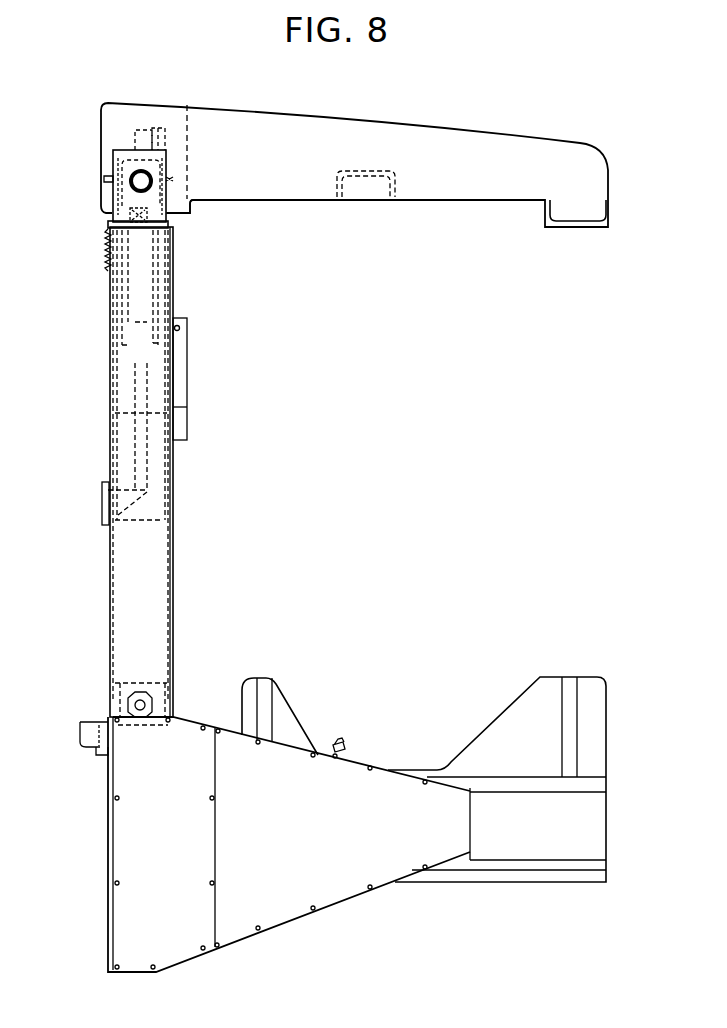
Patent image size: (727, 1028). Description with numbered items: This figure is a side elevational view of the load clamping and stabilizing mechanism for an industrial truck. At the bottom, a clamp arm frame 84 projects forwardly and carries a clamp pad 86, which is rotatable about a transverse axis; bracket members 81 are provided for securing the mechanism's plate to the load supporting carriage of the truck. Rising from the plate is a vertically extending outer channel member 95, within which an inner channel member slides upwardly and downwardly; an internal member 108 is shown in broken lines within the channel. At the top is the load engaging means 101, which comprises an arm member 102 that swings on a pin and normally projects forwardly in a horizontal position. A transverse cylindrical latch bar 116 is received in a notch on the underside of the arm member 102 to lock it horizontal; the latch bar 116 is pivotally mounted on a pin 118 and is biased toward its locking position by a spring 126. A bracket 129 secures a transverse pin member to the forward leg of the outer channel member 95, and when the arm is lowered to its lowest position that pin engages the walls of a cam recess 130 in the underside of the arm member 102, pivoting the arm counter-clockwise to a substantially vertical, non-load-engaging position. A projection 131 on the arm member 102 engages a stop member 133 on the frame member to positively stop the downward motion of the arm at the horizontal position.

The arm member 102 is at (438, 140).
The load engaging means 101 is at (313, 212).
The projection 131 is at (141, 128).
The stop member 133 is at (160, 128).
The latch bar 116 is at (112, 196).
The pin 118 is at (107, 219).
The spring 126 is at (105, 250).
The cam recess 130 is at (172, 213).
The bracket 129 is at (188, 380).
The piston rod 108 is at (122, 600).
The outer channel member 95 is at (175, 612).
The bracket member 81 is at (95, 752).
The clamp arm frame 84 is at (341, 914).
The clamp pad 86 is at (515, 713).